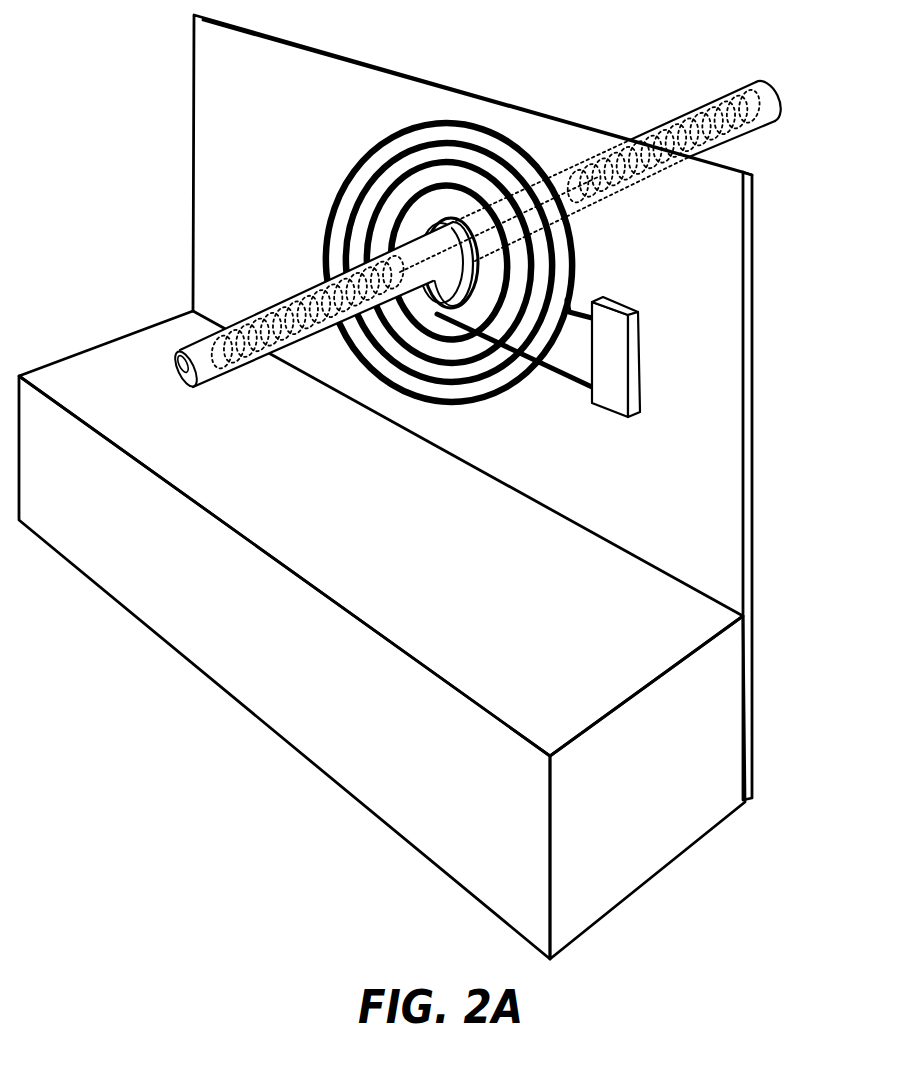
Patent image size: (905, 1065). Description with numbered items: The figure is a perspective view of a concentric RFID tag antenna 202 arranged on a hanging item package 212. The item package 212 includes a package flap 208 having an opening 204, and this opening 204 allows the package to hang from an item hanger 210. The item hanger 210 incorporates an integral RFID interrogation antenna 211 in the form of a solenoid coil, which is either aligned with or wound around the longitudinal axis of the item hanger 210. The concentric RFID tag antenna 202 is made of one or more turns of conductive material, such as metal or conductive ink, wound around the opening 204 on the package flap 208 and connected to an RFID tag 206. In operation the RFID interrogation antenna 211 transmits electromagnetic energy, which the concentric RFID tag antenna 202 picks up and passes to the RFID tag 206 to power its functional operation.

The concentric RFID tag antenna 202 is at (422, 261).
The opening 204 is at (379, 339).
The RFID tag 206 is at (653, 334).
The package flap 208 is at (428, 407).
The item hanger 210 is at (501, 214).
The RFID interrogation antenna 211 is at (492, 255).
The item package 212 is at (382, 616).